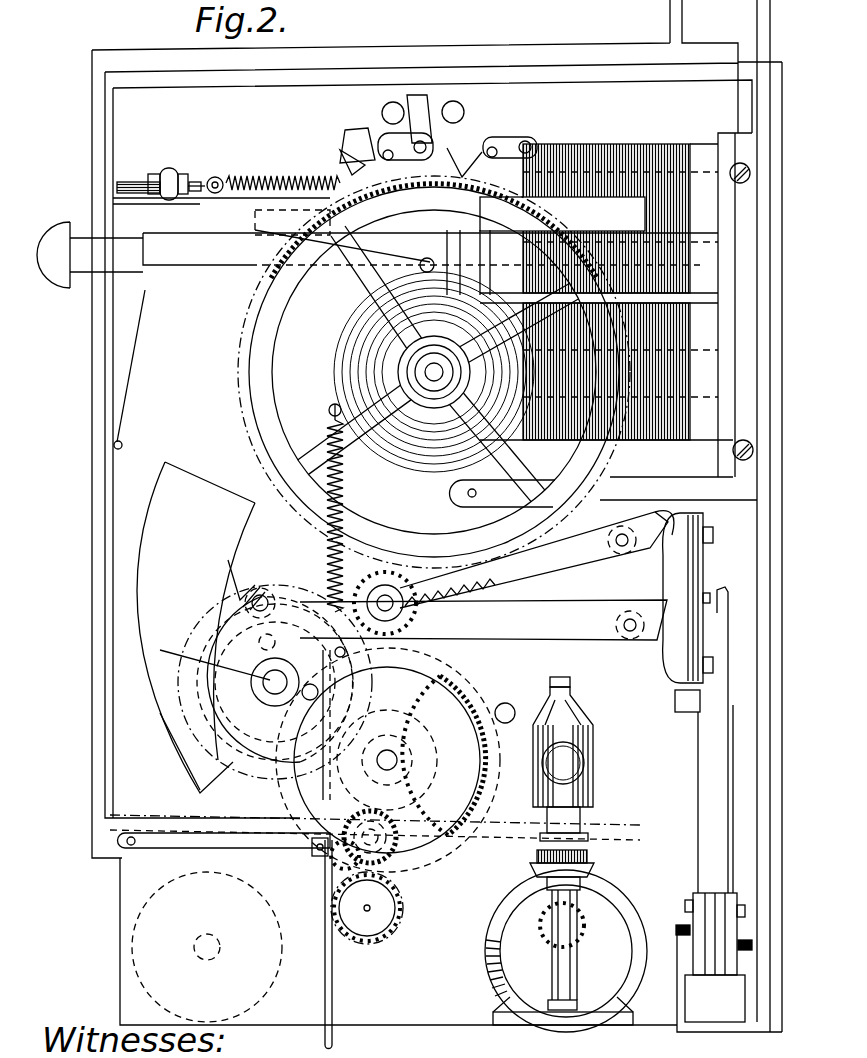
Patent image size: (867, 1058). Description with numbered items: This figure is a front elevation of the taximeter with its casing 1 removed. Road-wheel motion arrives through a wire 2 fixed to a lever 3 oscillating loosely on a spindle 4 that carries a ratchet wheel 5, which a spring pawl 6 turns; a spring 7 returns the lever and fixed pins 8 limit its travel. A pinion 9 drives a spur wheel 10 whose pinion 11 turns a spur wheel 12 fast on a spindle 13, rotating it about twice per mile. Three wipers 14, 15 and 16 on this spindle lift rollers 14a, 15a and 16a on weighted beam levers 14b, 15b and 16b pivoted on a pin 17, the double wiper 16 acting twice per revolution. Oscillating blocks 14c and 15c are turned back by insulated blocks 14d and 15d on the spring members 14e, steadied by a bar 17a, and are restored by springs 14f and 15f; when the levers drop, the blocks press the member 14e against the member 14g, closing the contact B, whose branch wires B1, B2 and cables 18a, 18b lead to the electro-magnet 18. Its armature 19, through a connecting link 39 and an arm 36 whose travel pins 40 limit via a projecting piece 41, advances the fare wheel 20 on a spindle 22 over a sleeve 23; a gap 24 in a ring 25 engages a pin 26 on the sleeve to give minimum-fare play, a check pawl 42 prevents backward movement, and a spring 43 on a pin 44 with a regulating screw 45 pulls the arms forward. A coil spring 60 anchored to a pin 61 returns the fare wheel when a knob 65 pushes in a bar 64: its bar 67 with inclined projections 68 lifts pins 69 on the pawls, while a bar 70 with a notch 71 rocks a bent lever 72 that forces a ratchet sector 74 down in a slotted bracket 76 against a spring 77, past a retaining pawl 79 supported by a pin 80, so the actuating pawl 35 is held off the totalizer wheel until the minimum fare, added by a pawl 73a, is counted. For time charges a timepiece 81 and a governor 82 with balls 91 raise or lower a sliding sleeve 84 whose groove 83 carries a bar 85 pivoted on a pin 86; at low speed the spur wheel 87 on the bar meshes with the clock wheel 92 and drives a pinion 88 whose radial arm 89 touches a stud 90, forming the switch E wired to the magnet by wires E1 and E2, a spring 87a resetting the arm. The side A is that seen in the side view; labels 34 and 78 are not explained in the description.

The casing 1 is at (437, 524).
The wire or lever 2 is at (333, 977).
The lever 3 is at (482, 690).
The spindle 4 is at (511, 703).
The ratchet wheel 5 is at (432, 612).
The spring pawl 6 is at (420, 735).
The spring 7 is at (388, 484).
The fixed pins 8 is at (366, 556).
The pinion 9 is at (565, 750).
The spur wheel 10 is at (512, 720).
The pinion 11 is at (292, 790).
The spur wheel 12 is at (200, 682).
The spindle 13 is at (262, 676).
The wiper 14 is at (300, 582).
The roller 14a is at (260, 594).
The weighted beam lever 14b is at (140, 512).
The oscillating block 14c is at (640, 618).
The insulated block 14d is at (680, 558).
The spring member 14e is at (698, 768).
The spring 14f is at (600, 602).
The spring member 14g is at (735, 745).
The wiper 15 is at (188, 737).
The roller 15a is at (218, 605).
The weighted beam lever 15b is at (250, 732).
The oscillating block 15c is at (660, 515).
The insulated block 15d is at (700, 563).
The spring 15f is at (620, 515).
The double wiper 16 is at (265, 650).
The roller 16a is at (700, 622).
The weighted beam lever 16b is at (205, 692).
The pin 17 is at (412, 567).
The bar 17a is at (737, 697).
The electro-magnet 18 is at (708, 203).
The cable 18a is at (768, 815).
The cable 18b is at (757, 28).
The armature 19 is at (332, 320).
The fare wheel 20 is at (240, 343).
The spindle 22 is at (392, 378).
The sleeve 23 is at (356, 508).
The gap 24 is at (395, 368).
The ring or boss 25 is at (340, 330).
The pin 26 is at (375, 386).
The pawl 34 is at (362, 128).
The actuating pawl 35 is at (398, 133).
The arm or lever 36 is at (420, 255).
The connecting link 39 is at (270, 268).
The stop pins 40 is at (394, 102).
The projecting piece 41 is at (419, 95).
The check pawl 42 is at (520, 144).
The spring 43 is at (240, 180).
The pin 44 is at (166, 168).
The screw 45 is at (212, 178).
The coil spring 60 is at (350, 345).
The pin 61 is at (262, 295).
The bar 64 is at (78, 250).
The knob 65 is at (44, 235).
The bar 67 is at (790, 205).
The projections 68 is at (350, 178).
The projecting pins 69 is at (350, 170).
The bar 70 is at (430, 249).
The curved notch 71 is at (514, 220).
The bent lever 72 is at (462, 184).
The pawl 73a is at (576, 162).
The ratchet sector 74 is at (230, 198).
The slotted bracket 76 is at (276, 219).
The spring 77 is at (285, 260).
The lever 78 is at (140, 306).
The retaining pawl 79 is at (356, 140).
The pin 80 is at (352, 160).
The timepiece 81 is at (150, 960).
The spring-controlled governor 82 is at (578, 734).
The groove 83 is at (580, 826).
The sliding sleeve 84 is at (582, 843).
The bar or rod 85 is at (255, 842).
The pin 86 is at (125, 858).
The spur wheel 87 is at (402, 857).
The spring 87a is at (400, 766).
The pinion 88 is at (325, 885).
The radial arm 89 is at (320, 843).
The stud 90 is at (342, 772).
The balls or weights 91 is at (575, 760).
The spur wheel 92 is at (395, 915).
The side A is at (789, 468).
The spring electric contact B is at (727, 608).
The branch wire B1 is at (760, 938).
The branch wire B2 is at (777, 40).
The switch E is at (302, 875).
The wire E1 is at (65, 410).
The wire E2 is at (670, 22).